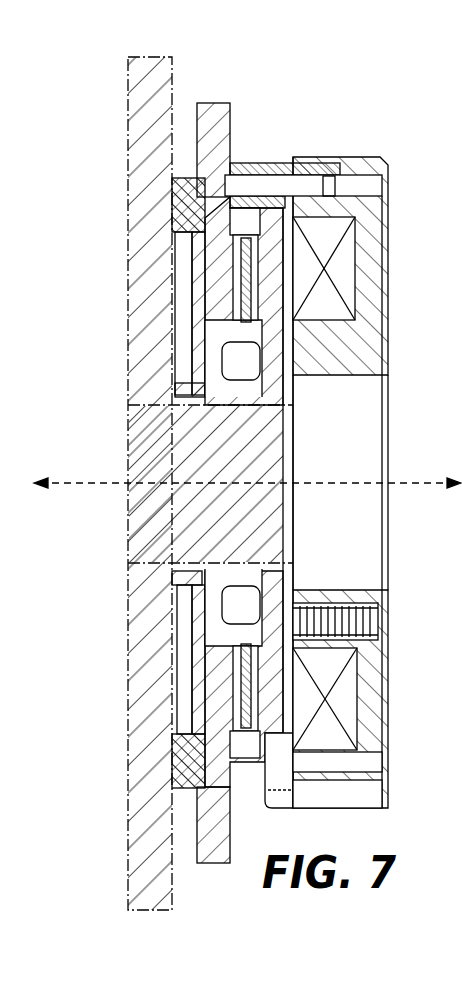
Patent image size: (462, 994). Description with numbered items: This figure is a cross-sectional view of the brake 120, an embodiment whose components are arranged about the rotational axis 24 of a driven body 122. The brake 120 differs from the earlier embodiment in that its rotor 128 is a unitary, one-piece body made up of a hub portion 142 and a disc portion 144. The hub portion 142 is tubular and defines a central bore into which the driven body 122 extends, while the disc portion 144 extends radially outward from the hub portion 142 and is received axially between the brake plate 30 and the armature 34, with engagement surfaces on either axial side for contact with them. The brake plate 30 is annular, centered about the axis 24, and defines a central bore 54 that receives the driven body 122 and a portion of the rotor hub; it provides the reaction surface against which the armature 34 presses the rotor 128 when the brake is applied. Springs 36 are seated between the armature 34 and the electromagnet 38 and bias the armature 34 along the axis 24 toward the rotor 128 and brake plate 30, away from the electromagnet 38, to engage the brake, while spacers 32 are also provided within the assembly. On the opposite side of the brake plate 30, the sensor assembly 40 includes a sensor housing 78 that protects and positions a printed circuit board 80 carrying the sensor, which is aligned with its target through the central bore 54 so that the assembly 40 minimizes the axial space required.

The brake 120 is at (118, 114).
The rotational axis 24 is at (95, 488).
The driven body 122 is at (283, 495).
The brake plate 30 is at (222, 118).
The sensor housing 78 is at (183, 767).
The printed circuit board 80 is at (195, 705).
The sensor assembly 40 is at (185, 348).
The rotor 128 is at (285, 390).
The disc portion 144 is at (258, 268).
The hub portion 142 is at (225, 338).
The central bore 54 is at (225, 648).
The electromagnet 38 is at (400, 156).
The armature 34 is at (278, 227).
The spacers 32 is at (252, 165).
The springs 36 is at (345, 630).